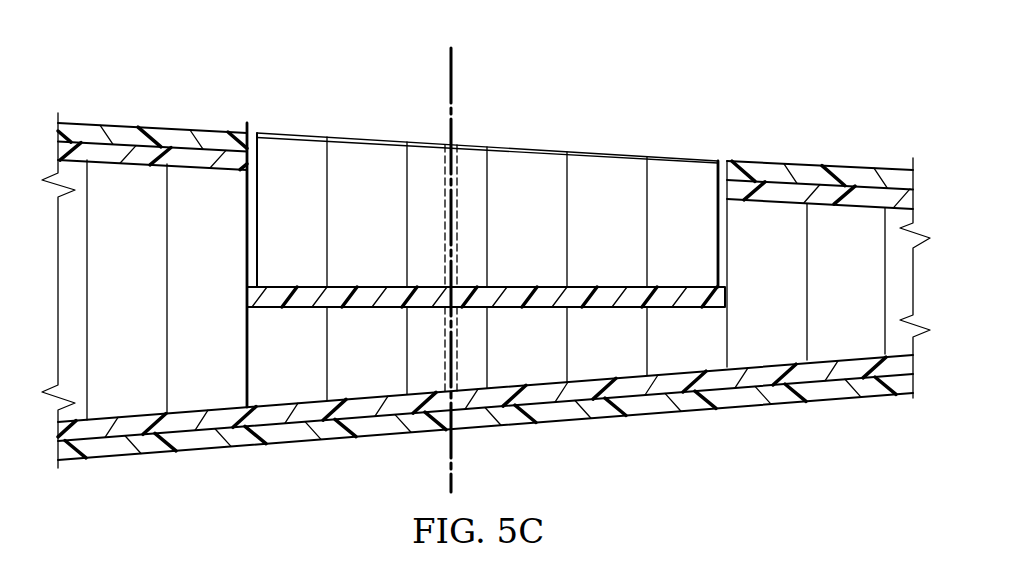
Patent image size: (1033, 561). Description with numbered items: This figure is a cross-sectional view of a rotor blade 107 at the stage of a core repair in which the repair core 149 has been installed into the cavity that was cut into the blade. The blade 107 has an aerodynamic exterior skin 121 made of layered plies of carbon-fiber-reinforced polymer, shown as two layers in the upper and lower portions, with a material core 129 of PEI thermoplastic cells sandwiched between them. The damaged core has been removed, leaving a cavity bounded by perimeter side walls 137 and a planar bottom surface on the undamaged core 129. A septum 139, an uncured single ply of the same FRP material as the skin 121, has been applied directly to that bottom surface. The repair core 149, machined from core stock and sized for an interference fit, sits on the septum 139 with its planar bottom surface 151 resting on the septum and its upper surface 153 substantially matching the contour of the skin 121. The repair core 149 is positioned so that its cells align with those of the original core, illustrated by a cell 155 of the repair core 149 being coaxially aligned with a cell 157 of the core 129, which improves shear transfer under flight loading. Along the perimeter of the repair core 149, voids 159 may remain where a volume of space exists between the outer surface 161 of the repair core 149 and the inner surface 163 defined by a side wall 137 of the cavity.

The blade 107 is at (821, 68).
The aerodynamic exterior skin 121 is at (116, 127).
The material core 129 is at (217, 388).
The perimeter side walls 137 is at (245, 236).
The septum 139 is at (602, 300).
The repair core 149 is at (664, 160).
The planar bottom surface 151 is at (526, 287).
The upper surface 153 is at (597, 143).
The cell 155 is at (445, 165).
The cell 157 is at (445, 336).
The voids 159 is at (256, 142).
The outer surface 161 is at (727, 237).
The inner surface 163 is at (727, 248).